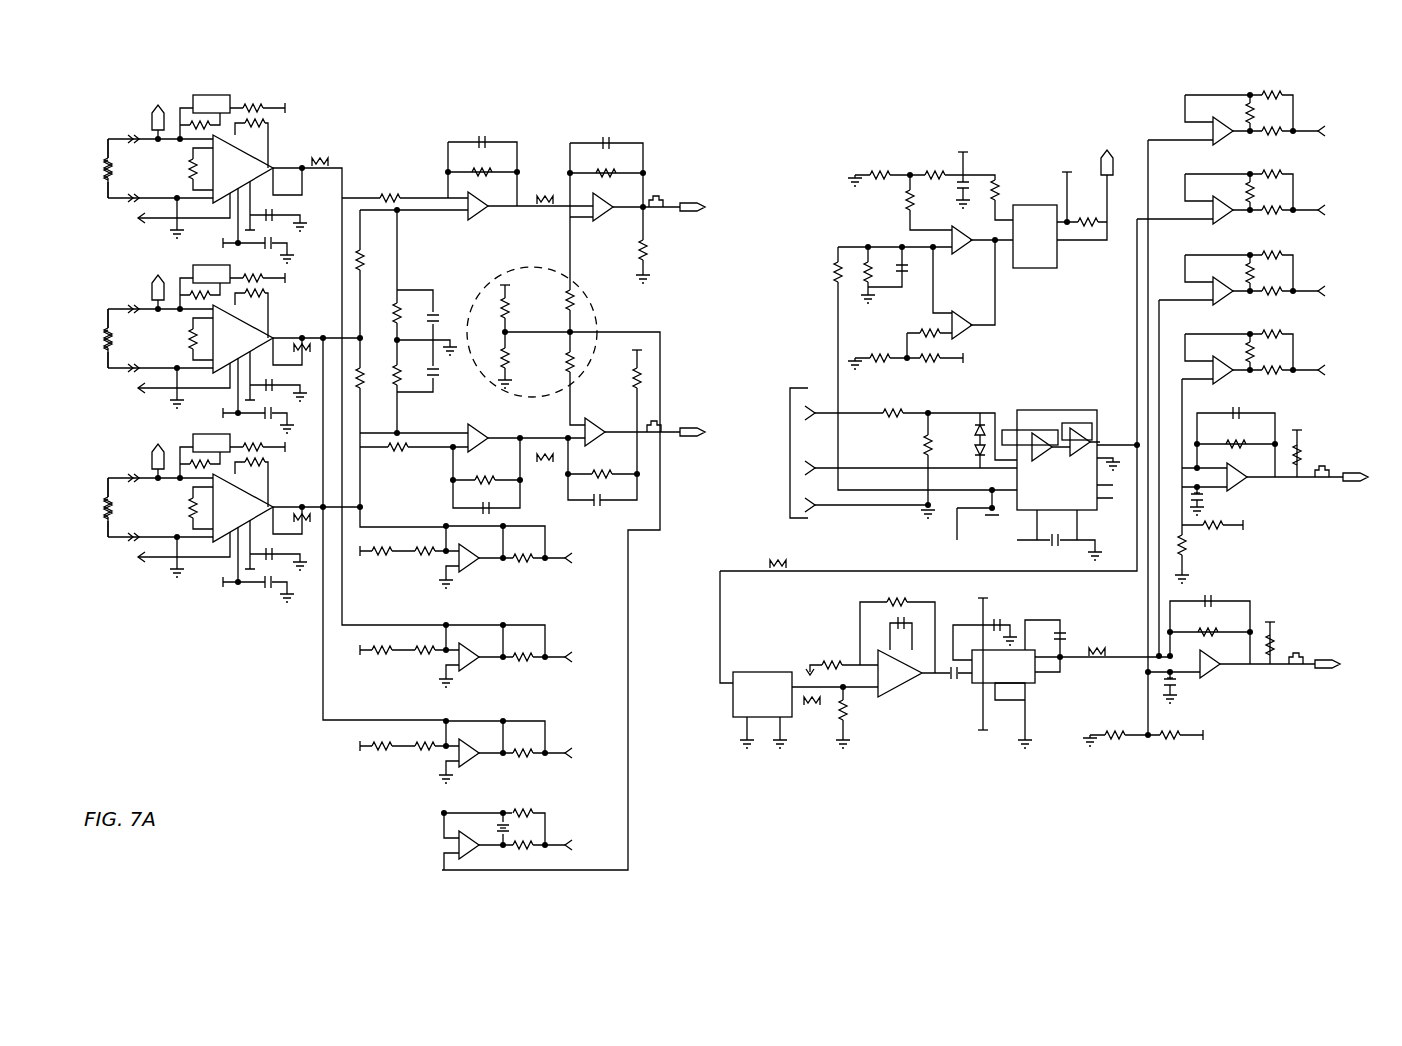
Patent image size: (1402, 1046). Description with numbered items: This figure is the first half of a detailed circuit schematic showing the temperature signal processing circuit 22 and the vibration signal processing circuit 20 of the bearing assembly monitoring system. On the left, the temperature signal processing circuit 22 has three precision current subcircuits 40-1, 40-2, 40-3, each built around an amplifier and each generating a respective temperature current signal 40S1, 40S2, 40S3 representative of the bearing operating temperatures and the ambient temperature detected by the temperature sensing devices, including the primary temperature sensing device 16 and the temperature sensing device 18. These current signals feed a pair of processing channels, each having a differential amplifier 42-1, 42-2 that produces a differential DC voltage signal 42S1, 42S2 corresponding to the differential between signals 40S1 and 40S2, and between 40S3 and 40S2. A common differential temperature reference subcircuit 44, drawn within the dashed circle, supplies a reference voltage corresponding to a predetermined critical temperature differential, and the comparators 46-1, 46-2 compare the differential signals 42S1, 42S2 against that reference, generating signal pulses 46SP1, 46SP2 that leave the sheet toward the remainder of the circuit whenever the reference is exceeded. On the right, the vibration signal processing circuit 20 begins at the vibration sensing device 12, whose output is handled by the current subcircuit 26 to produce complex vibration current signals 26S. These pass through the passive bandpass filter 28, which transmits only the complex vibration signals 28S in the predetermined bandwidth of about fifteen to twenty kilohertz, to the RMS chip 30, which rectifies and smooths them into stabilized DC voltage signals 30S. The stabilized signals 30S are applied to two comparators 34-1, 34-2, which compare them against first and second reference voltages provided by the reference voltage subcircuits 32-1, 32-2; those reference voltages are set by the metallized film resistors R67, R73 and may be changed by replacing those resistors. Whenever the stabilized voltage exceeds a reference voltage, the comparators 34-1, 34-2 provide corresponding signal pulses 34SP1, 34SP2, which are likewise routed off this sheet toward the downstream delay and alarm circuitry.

The temperature signal processing circuit 22 is at (508, 140).
The precision current subcircuit 40-1 is at (280, 142).
The precision current subcircuit 40-2 is at (278, 318).
The precision current subcircuit 40-3 is at (270, 488).
The temperature current signal 40S1 is at (332, 154).
The temperature current signal 40S2 is at (300, 343).
The temperature current signal 40S3 is at (303, 525).
The vibration signal processing circuit 20 is at (102, 172).
The temperature sensing device 18 is at (102, 342).
The primary temperature sensing device 16 is at (102, 510).
The differential amplifier 42-1 is at (493, 136).
The differential amplifier 42-2 is at (448, 475).
The differential DC voltage signal 42S1 is at (550, 182).
The differential DC voltage signal 42S2 is at (548, 464).
The differential temperature reference subcircuit 44 is at (488, 268).
The comparator 46-1 is at (612, 272).
The comparator 46-2 is at (612, 448).
The signal pulse 46SP1 is at (666, 196).
The signal pulse 46SP2 is at (666, 420).
The current subcircuit 26 is at (1010, 400).
The vibration sensing device 12 is at (823, 455).
The complex vibration current signals 26S is at (790, 558).
The passive bandpass filter 28 is at (798, 712).
The complex vibration signals 28S is at (814, 710).
The RMS chip 30 is at (1042, 694).
The stabilized DC voltage signals 30S is at (1098, 644).
The reference voltage subcircuit 32-1 is at (1200, 565).
The reference voltage subcircuit 32-2 is at (1151, 760).
The metallized film resistor R67 is at (1115, 727).
The metallized film resistor R73 is at (1175, 724).
The comparator 34-1 is at (1252, 508).
The comparator 34-2 is at (1228, 695).
The signal pulse 34SP1 is at (1319, 464).
The signal pulse 34SP2 is at (1292, 652).